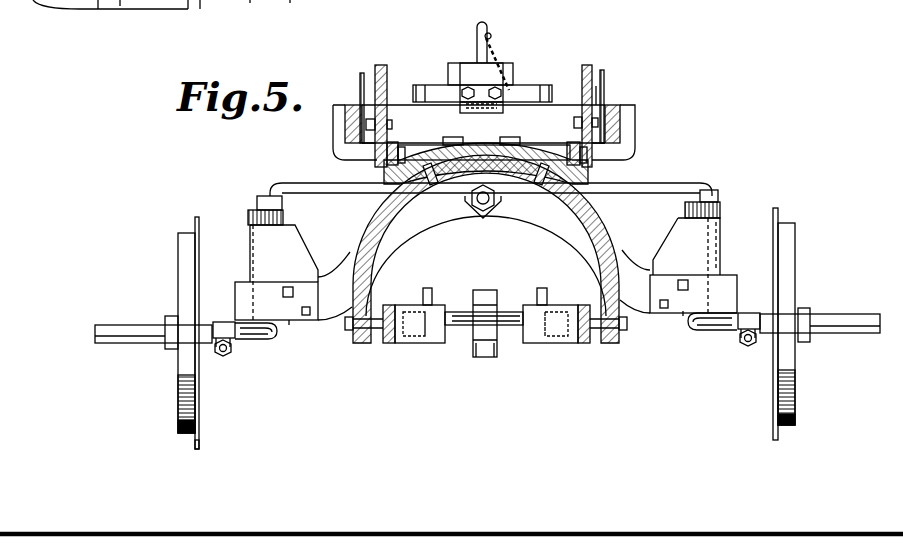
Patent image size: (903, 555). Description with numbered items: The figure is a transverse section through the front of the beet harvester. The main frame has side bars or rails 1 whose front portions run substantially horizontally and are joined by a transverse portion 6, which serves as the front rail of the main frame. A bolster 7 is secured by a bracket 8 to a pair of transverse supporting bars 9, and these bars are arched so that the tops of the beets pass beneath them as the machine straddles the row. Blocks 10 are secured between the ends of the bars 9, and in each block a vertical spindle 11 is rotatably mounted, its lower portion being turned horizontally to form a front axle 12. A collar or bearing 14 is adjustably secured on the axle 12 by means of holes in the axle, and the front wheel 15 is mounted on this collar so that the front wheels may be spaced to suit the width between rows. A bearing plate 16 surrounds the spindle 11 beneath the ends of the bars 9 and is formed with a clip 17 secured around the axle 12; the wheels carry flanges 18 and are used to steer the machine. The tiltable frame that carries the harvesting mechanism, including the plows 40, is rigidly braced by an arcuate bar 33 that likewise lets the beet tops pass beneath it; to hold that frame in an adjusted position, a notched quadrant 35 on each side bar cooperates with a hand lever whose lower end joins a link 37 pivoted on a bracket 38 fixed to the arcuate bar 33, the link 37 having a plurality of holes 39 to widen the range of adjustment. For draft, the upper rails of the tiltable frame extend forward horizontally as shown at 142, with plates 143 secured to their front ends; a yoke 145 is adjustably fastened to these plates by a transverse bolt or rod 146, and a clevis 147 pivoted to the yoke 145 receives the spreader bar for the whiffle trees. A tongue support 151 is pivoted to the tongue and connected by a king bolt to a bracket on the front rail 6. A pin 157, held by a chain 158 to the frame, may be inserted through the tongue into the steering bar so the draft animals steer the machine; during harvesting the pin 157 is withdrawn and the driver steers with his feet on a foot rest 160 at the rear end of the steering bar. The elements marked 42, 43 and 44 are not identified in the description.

The side bars or rails 1 is at (345, 124).
The transverse portion 6 is at (554, 116).
The bolster 7 is at (417, 152).
The bracket 8 is at (484, 216).
The transverse supporting bars 9 is at (352, 270).
The blocks 10 is at (263, 247).
The vertical spindle 11 is at (257, 202).
The axle 12 is at (118, 338).
The collar or bearing 14 is at (170, 346).
The front wheel 15 is at (186, 265).
The bearing plate 16 is at (290, 325).
The clip 17 is at (236, 338).
The flanges 18 is at (199, 446).
The arcuate or arched bar 33 is at (580, 236).
The notched quadrant 35 is at (360, 76).
The link 37 is at (387, 78).
The bracket 38 is at (592, 170).
The holes 39 is at (597, 94).
The plows 40 is at (103, 5).
The fragment 42 is at (200, 9).
The fragment 43 is at (295, 11).
The fragment 44 is at (260, 10).
The forward horizontal extensions of the rails 142 is at (379, 345).
The plates 143 is at (426, 296).
The yoke 145 is at (462, 313).
The transverse bolt or rod 146 is at (468, 326).
The clevis 147 is at (497, 345).
The tongue support 151 is at (456, 70).
The pin 157 is at (488, 27).
The chain 158 is at (505, 55).
The foot rest 160 is at (535, 96).